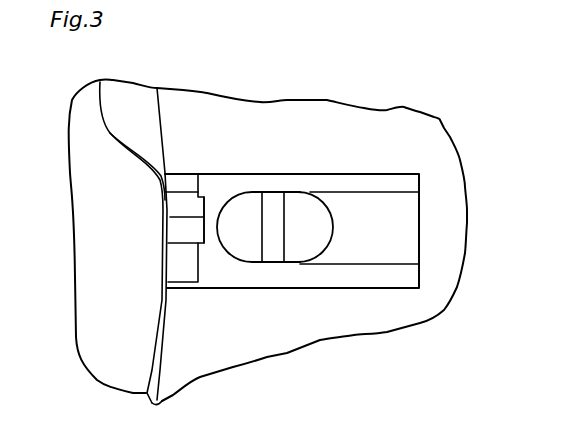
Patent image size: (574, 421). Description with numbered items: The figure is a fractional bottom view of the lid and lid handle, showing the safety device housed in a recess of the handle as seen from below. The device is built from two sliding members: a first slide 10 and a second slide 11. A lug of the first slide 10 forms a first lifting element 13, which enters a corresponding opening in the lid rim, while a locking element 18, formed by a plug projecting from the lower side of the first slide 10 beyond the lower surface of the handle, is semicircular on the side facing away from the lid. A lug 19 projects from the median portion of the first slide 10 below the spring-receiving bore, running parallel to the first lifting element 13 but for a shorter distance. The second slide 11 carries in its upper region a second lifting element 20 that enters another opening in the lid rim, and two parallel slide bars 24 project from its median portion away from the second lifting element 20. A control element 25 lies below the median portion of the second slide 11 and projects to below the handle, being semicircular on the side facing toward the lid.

The first slide 10 is at (403, 248).
The second slide 11 is at (215, 193).
The first lifting element 13 is at (197, 189).
The locking element 18 is at (303, 212).
The lug 19 is at (273, 208).
The second lifting element 20 is at (175, 263).
The slide bars 24 is at (382, 183).
The control element 25 is at (237, 212).